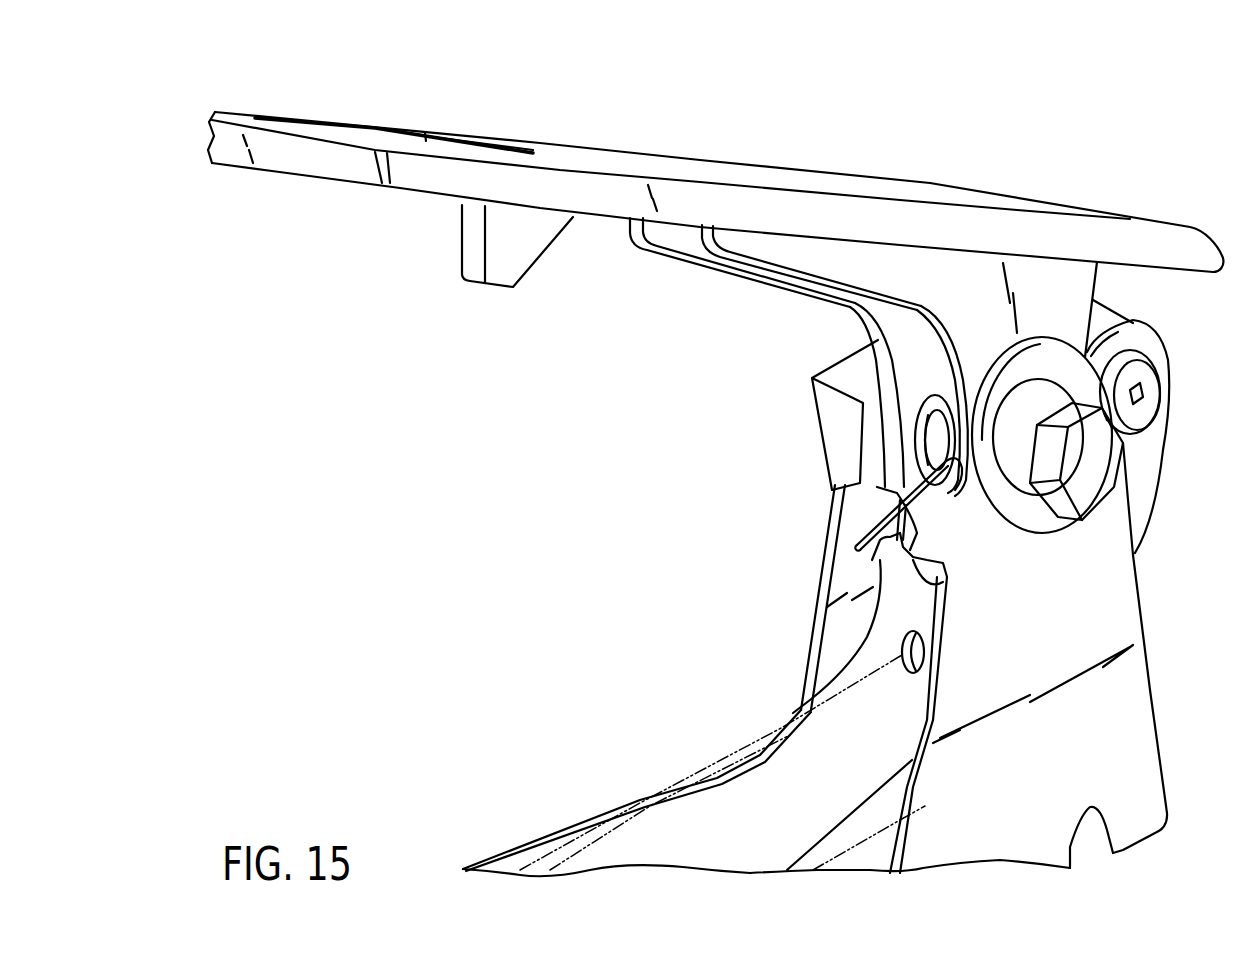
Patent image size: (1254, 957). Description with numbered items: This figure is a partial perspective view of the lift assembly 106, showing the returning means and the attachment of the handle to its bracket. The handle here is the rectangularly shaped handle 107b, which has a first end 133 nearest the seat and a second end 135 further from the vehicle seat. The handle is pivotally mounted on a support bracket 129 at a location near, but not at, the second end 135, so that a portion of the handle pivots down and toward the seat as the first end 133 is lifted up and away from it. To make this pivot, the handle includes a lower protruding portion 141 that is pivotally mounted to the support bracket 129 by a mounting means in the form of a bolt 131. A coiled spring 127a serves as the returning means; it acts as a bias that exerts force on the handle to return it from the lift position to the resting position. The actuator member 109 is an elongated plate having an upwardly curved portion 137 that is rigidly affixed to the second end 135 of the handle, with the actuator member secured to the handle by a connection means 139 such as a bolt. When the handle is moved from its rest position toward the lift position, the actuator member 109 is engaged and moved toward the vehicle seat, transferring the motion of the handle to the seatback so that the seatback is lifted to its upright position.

The lift assembly 106 is at (283, 78).
The rectangularly shaped handle 107b is at (553, 143).
The first end 133 is at (290, 167).
The second end 135 is at (967, 188).
The lower protruding portion 141 is at (967, 308).
The support bracket 129 is at (822, 558).
The coiled spring 127a is at (967, 490).
The bolt 131 is at (1088, 493).
The connection means 139 is at (1143, 370).
The upwardly curved portion 137 is at (1163, 488).
The actuator member 109 is at (557, 833).